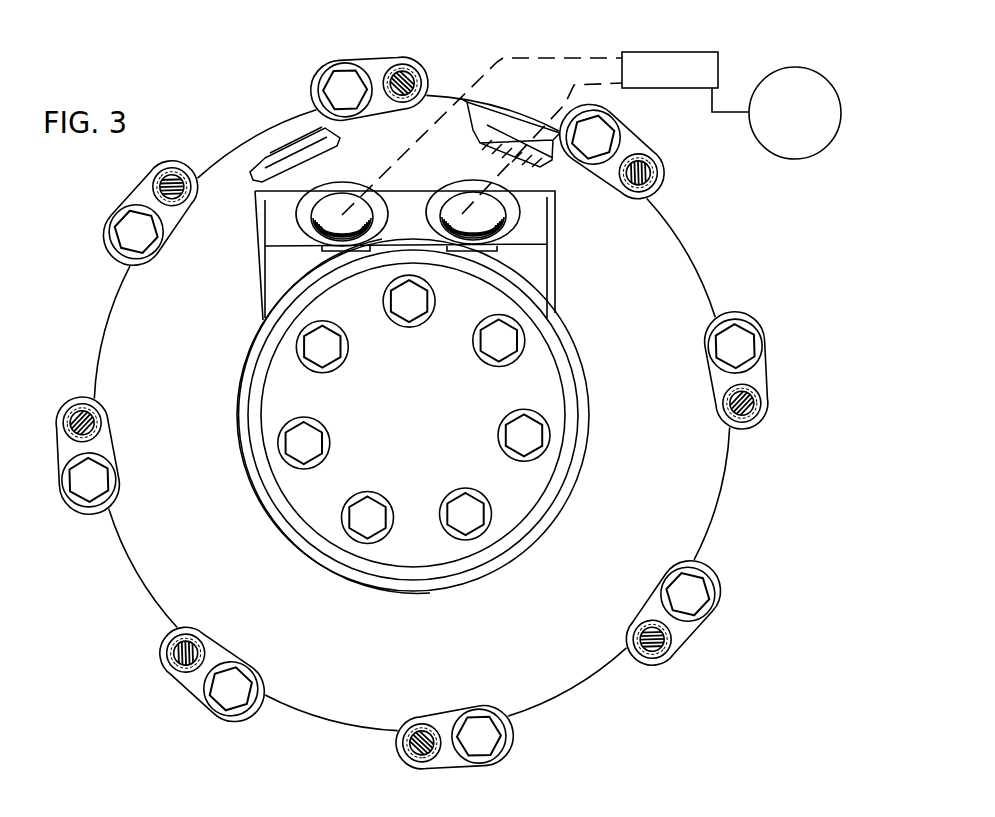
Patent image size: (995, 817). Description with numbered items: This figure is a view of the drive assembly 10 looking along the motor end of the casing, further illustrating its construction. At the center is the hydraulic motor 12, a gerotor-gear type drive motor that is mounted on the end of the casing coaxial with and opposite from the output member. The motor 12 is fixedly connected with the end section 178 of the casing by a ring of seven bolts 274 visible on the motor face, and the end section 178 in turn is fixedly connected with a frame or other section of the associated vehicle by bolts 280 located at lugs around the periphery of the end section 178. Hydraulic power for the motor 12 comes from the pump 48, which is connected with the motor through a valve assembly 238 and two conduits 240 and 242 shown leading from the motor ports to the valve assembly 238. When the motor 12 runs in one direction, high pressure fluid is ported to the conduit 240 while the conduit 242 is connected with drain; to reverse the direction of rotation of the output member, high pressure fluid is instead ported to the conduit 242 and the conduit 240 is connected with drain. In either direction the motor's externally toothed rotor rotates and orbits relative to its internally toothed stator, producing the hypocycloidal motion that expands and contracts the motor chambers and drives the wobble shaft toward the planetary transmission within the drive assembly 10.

The drive assembly 10 is at (752, 232).
The hydraulic motor 12 is at (582, 400).
The pump 48 is at (818, 74).
The end section 178 is at (681, 288).
The valve assembly 238 is at (747, 30).
The conduit 240 is at (527, 58).
The conduit 242 is at (577, 85).
The bolts 274 is at (312, 447).
The bolts 280 is at (750, 421).